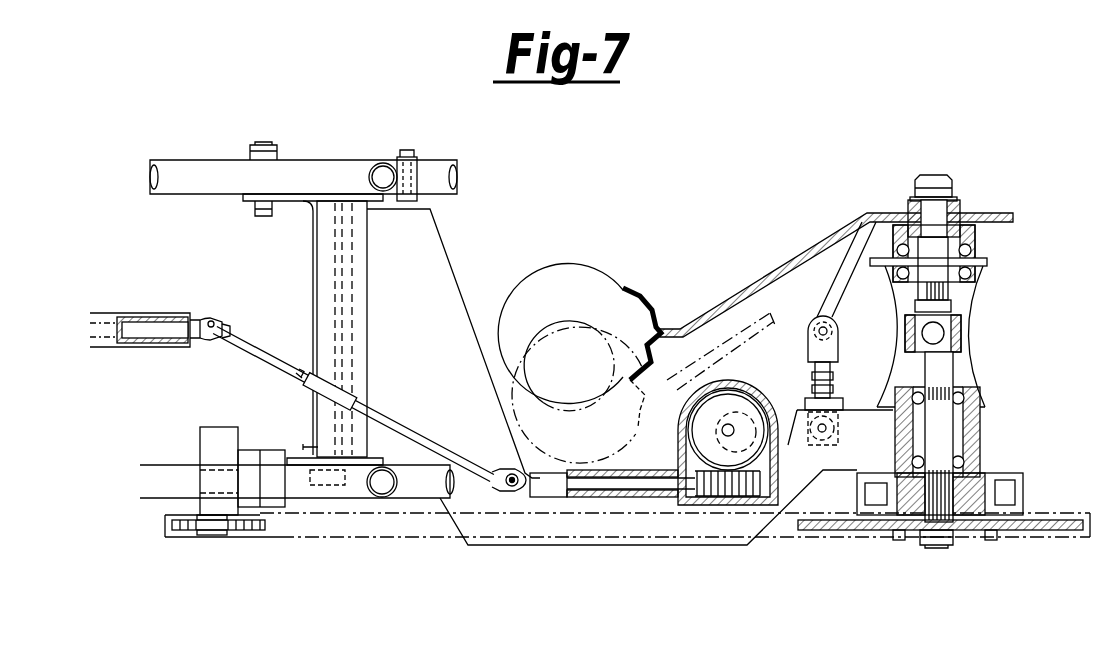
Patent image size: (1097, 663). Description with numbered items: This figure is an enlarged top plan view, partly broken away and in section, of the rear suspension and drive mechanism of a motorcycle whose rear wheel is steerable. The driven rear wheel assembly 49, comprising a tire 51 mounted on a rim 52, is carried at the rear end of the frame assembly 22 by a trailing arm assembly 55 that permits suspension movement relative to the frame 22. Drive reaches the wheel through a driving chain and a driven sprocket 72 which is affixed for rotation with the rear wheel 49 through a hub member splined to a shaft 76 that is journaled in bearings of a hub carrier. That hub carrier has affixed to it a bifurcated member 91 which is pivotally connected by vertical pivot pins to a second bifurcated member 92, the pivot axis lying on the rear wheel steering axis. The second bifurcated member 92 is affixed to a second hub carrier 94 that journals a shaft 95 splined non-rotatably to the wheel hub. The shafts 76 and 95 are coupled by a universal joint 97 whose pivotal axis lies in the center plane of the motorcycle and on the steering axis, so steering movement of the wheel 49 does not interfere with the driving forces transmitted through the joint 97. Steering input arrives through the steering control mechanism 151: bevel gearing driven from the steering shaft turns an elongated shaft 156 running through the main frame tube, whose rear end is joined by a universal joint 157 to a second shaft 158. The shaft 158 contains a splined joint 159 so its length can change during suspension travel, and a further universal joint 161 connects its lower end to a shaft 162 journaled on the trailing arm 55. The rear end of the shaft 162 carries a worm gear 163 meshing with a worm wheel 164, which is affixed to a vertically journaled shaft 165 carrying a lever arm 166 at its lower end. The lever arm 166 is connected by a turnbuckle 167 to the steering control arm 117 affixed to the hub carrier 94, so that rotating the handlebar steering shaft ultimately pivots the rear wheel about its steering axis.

The frame assembly 22 is at (348, 156).
The driven rear wheel assembly 49 is at (806, 245).
The tire 51 is at (597, 266).
The rim 52 is at (643, 295).
The trailing arm assembly 55 is at (440, 288).
The driven sprocket 72 is at (1037, 523).
The shaft 76 is at (937, 548).
The bifurcated member 91 is at (975, 378).
The second bifurcated member 92 is at (977, 290).
The second hub carrier 94 is at (982, 242).
The shaft 95 is at (940, 213).
The universal joint 97 is at (979, 333).
The steering control arm 117 is at (850, 277).
The steering control mechanism 151 is at (228, 311).
The elongated shaft 156 is at (138, 325).
The universal joint 157 is at (207, 341).
The second shaft 158 is at (395, 412).
The splined joint 159 is at (335, 378).
The universal joint 161 is at (502, 457).
The further shaft 162 is at (602, 488).
The worm gear 163 is at (727, 493).
The worm wheel 164 is at (745, 392).
The shaft 165 is at (720, 435).
The lever arm 166 is at (790, 447).
The turnbuckle 167 is at (872, 343).